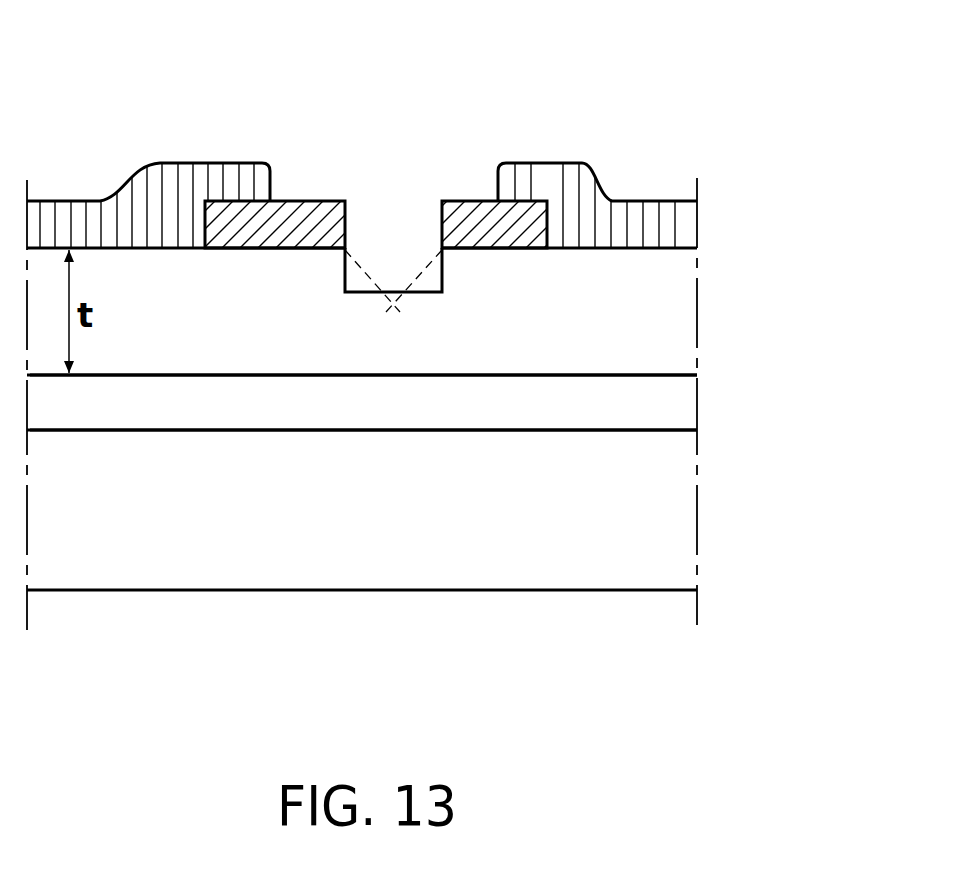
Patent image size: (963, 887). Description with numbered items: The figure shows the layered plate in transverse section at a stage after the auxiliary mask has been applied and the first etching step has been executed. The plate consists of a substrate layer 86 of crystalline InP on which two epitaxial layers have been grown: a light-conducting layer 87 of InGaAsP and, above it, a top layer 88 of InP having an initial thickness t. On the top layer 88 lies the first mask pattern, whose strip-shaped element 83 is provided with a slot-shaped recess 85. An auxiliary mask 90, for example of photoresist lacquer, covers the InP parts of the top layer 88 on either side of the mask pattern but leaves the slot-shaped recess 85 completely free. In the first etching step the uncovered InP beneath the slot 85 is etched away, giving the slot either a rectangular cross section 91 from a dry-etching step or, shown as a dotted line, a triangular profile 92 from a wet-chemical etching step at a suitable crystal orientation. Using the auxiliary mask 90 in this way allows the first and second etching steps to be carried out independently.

The strip-shaped element 83 is at (461, 227).
The slot-shaped recess 85 is at (385, 225).
The substrate layer 86 is at (650, 515).
The light-conducting layer 87 is at (642, 395).
The top layer 88 is at (640, 303).
The auxiliary mask 90 is at (585, 225).
The rectangular cross section 91 is at (443, 280).
The triangular profile 92 is at (387, 302).